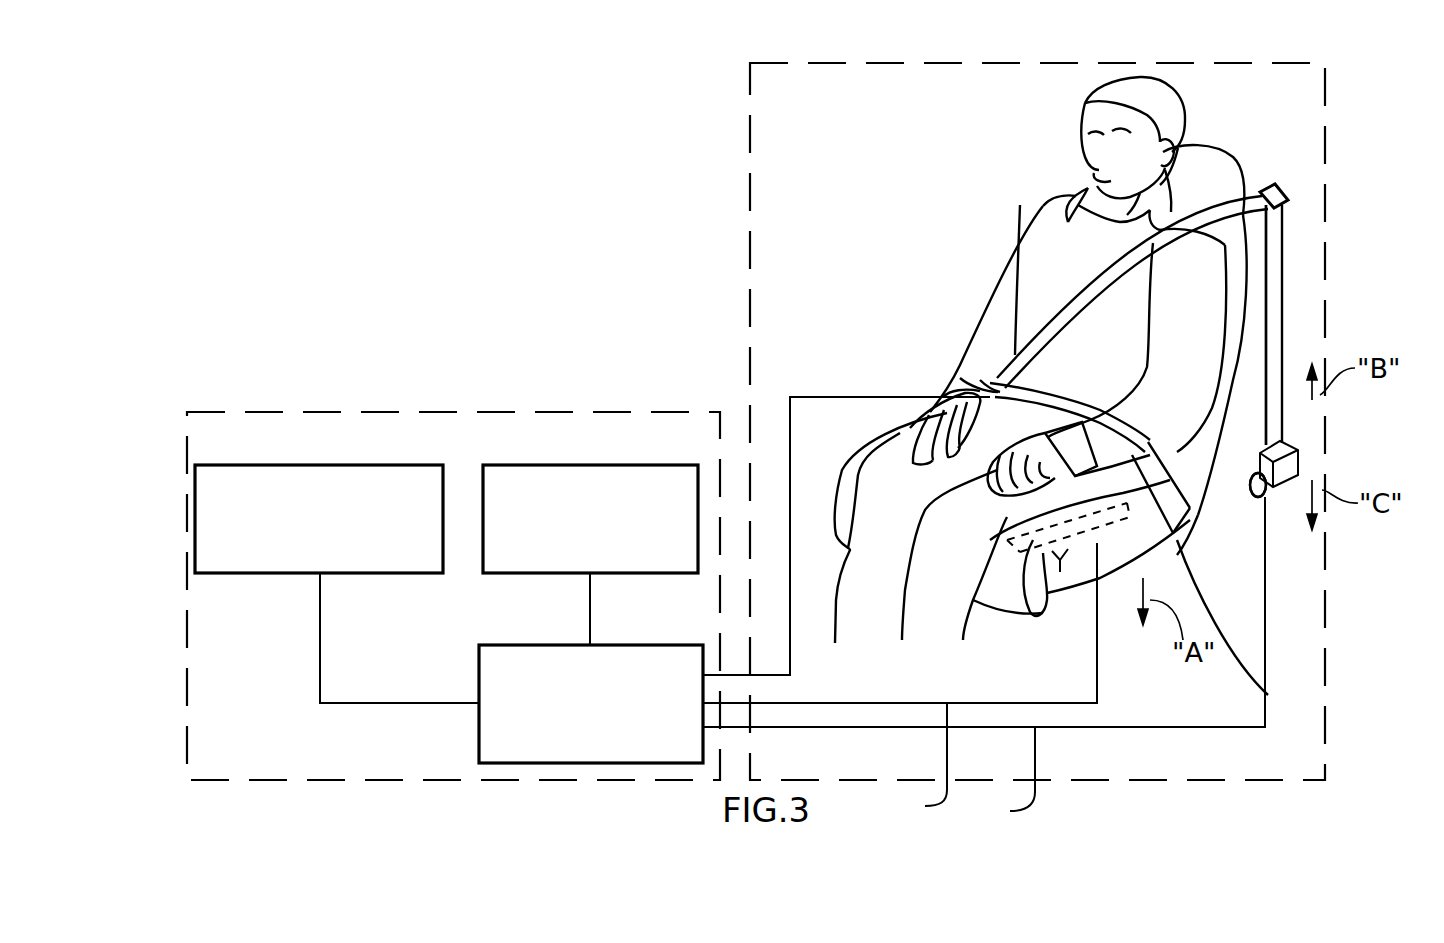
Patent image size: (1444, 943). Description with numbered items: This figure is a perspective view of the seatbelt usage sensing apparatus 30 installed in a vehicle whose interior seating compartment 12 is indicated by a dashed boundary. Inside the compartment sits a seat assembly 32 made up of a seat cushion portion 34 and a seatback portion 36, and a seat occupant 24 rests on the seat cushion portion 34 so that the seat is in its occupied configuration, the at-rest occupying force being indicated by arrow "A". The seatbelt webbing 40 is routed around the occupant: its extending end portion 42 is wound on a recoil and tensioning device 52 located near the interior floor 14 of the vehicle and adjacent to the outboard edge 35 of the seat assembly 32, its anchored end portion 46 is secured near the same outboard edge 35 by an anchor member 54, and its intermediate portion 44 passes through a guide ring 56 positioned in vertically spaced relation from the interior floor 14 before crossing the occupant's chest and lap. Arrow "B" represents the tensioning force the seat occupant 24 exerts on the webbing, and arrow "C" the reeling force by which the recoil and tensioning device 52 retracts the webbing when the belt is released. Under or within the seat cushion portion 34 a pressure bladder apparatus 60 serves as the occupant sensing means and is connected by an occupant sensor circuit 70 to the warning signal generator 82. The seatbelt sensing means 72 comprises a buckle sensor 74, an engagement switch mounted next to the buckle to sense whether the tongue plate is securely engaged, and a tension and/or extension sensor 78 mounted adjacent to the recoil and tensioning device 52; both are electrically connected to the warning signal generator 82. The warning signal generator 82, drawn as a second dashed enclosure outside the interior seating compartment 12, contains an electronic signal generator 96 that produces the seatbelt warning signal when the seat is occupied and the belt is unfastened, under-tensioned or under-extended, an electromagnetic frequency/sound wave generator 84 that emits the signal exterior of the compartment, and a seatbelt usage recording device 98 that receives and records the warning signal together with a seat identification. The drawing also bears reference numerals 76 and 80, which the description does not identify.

The interior seating compartment 12 is at (882, 63).
The interior floor 14 is at (1300, 455).
The seat occupant 24 is at (1050, 222).
The seatbelt usage sensing apparatus 30 is at (698, 162).
The seat assembly 32 is at (1267, 557).
The seat cushion portion 34 is at (1047, 597).
The outboard edge 35 is at (1217, 507).
The seatback portion 36 is at (1246, 320).
The seatbelt webbing 40 is at (1230, 152).
The extending end portion 42 is at (1283, 358).
The intermediate portion 44 is at (1003, 380).
The anchored end portion 46 is at (1268, 695).
The recoil and tensioning device 52 is at (1295, 450).
The anchor member 54 is at (1192, 492).
The guide ring 56 is at (1282, 188).
The pressure bladder apparatus 60 is at (1112, 538).
The occupant sensor circuit 70 is at (916, 763).
The seatbelt sensing means 72 is at (960, 345).
The buckle sensor 74 is at (982, 380).
The sensor unit 76 is at (790, 397).
The tension and/or extension sensor 78 is at (1270, 497).
The wire 80 is at (984, 662).
The warning signal generator 82 is at (345, 780).
The electromagnetic frequency/sound wave generator 84 is at (511, 465).
The electronic signal generator 96 is at (548, 763).
The seatbelt usage recording device 98 is at (295, 465).